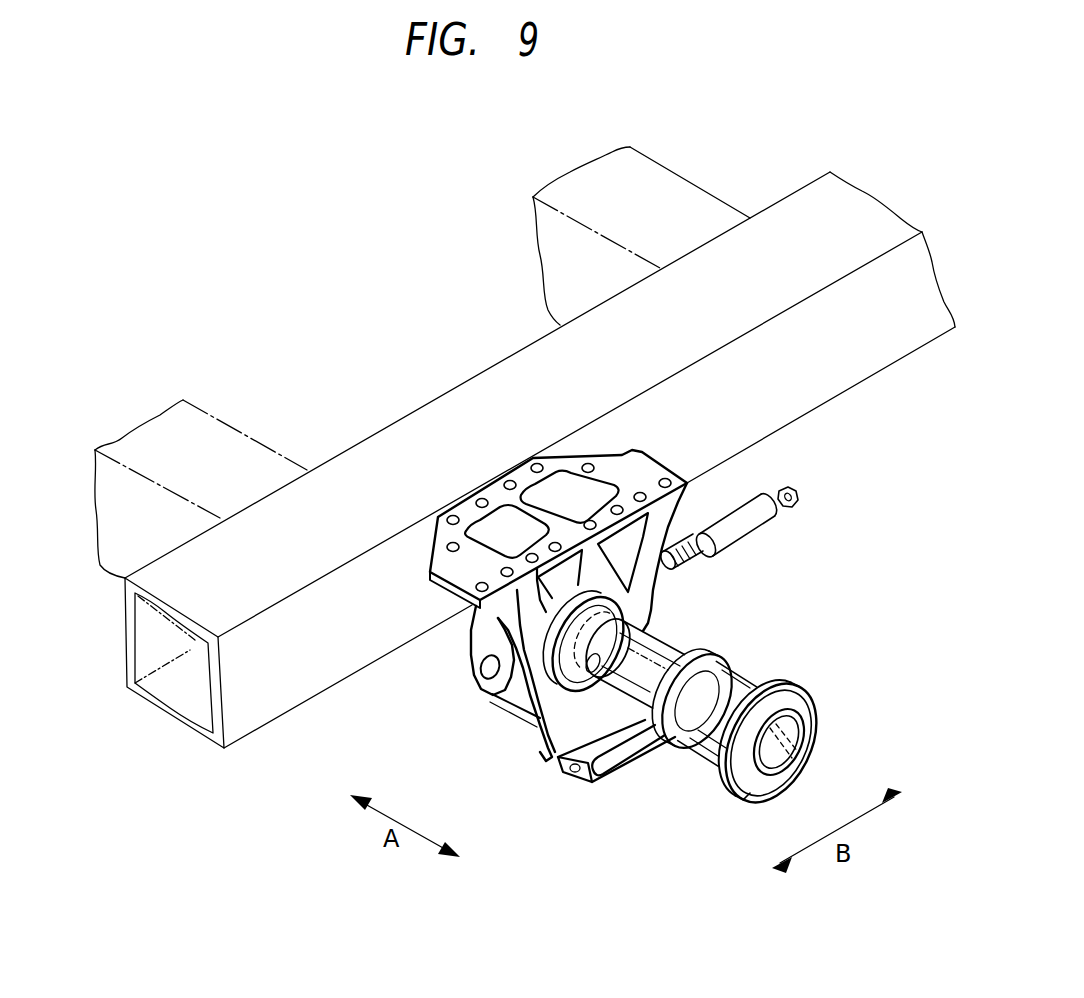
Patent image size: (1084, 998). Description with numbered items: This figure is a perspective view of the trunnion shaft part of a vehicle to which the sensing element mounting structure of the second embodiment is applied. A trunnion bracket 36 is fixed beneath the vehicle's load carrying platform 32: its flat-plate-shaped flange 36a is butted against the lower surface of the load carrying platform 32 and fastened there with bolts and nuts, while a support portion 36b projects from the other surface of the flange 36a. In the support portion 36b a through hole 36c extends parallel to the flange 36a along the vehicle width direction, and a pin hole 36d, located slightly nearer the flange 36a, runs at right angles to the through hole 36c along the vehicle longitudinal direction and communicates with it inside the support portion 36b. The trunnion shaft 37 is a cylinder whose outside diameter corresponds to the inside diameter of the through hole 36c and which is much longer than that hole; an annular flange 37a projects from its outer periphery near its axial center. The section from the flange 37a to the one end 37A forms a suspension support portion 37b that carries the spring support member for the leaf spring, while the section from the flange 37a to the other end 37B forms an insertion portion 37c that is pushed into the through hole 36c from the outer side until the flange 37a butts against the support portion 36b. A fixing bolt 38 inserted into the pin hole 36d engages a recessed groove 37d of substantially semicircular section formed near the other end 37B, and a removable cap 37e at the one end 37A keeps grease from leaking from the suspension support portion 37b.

The load carrying platform 32 is at (486, 382).
The trunnion bracket 36 is at (532, 616).
The flange 36a is at (437, 518).
The support portion 36b is at (507, 700).
The through hole 36c is at (594, 668).
The pin hole 36d is at (488, 670).
The trunnion shaft 37 is at (702, 728).
The one end 37A is at (808, 747).
The other end 37B is at (633, 595).
The annular flange 37a is at (678, 745).
The suspension support portion 37b is at (712, 740).
The insertion portion 37c is at (563, 748).
The recessed groove 37d is at (645, 621).
The cap 37e is at (757, 783).
The fixing bolt 38 is at (750, 520).